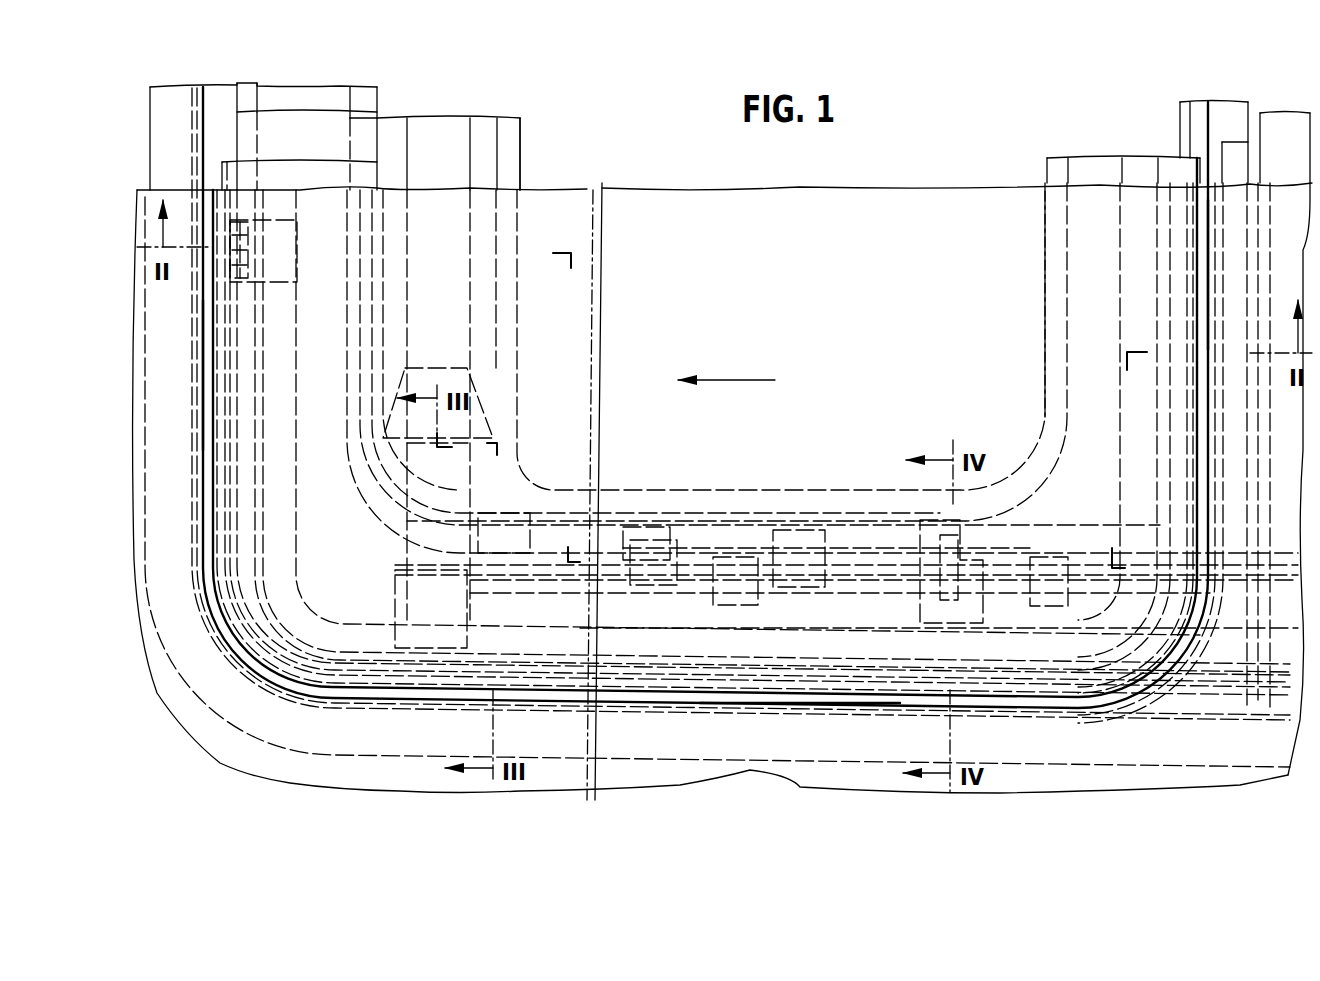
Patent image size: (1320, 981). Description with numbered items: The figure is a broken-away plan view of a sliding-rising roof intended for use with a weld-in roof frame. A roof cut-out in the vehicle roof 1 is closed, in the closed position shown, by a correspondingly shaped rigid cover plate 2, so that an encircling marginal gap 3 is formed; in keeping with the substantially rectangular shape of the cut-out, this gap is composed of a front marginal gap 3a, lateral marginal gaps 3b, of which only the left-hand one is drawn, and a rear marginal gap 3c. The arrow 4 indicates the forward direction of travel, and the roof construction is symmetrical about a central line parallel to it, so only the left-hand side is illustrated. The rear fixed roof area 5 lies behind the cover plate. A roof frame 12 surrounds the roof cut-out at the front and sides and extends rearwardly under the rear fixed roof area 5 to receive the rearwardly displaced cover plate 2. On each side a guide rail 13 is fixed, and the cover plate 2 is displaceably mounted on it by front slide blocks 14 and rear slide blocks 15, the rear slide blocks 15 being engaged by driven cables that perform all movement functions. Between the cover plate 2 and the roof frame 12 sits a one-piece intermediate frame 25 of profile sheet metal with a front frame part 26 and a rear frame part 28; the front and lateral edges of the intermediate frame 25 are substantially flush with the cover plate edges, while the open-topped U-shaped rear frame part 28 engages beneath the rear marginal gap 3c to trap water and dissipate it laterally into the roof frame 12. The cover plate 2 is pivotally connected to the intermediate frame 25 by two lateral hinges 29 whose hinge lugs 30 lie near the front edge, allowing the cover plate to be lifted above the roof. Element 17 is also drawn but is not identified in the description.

The vehicle roof 1 is at (785, 768).
The cover plate 2 is at (753, 290).
The marginal gap 3 is at (655, 690).
The front marginal gap 3a is at (207, 372).
The lateral marginal gap 3b is at (817, 700).
The rear marginal gap 3c is at (1205, 271).
The arrow 4 is at (752, 380).
The rear fixed roof area 5 is at (1277, 538).
The roof frame 12 is at (250, 76).
The guide rail 13 is at (395, 595).
The front slide block 14 is at (531, 560).
The rear slide block 15 is at (918, 590).
The guide block 17 is at (318, 172).
The intermediate frame 25 is at (441, 108).
The front frame part 26 is at (511, 132).
The rear frame part 28 is at (1198, 127).
The hinge 29 is at (278, 220).
The hinge lug 30 is at (248, 250).